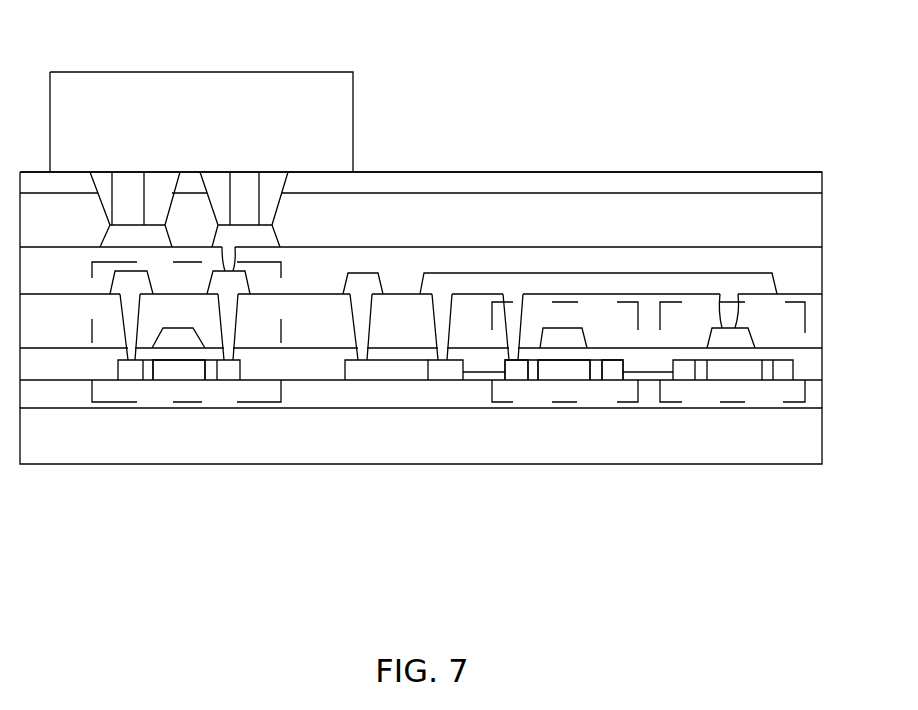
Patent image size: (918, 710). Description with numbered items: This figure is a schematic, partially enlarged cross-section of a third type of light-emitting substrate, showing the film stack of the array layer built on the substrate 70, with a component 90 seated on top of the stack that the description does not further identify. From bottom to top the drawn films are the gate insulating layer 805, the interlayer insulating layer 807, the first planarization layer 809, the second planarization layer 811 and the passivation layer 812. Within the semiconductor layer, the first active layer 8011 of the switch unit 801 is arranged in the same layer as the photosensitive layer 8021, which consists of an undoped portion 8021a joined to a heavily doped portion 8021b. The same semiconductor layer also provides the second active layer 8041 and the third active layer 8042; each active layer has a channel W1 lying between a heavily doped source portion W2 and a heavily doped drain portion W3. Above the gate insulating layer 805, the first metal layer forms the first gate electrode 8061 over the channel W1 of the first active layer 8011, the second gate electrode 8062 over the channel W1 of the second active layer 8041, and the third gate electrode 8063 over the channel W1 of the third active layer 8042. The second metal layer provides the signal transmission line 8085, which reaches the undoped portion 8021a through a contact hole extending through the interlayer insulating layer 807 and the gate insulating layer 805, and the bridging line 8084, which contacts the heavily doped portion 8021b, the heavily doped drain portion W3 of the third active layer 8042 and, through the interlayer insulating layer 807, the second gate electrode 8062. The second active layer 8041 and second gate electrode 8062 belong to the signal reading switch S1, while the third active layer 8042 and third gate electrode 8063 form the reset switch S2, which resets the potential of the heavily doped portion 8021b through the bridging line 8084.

The substrate 70 is at (798, 435).
The light emitting chip 90 is at (210, 107).
The switch unit 801 is at (186, 403).
The first active layer 8011 is at (163, 373).
The photosensitive layer 8021 is at (407, 463).
The undoped portion 8021a is at (365, 372).
The heavily doped portion 8021b is at (440, 372).
The second active layer 8041 is at (737, 370).
The third active layer 8042 is at (577, 372).
The gate insulating layer 805 is at (805, 370).
The first gate electrode 8061 is at (188, 340).
The second gate electrode 8062 is at (728, 340).
The third gate electrode 8063 is at (558, 340).
The interlayer insulating layer 807 is at (808, 338).
The bridging line 8084 is at (467, 288).
The signal transmission line 8085 is at (362, 290).
The first planarization layer 809 is at (798, 276).
The second planarization layer 811 is at (798, 229).
The passivation layer 812 is at (798, 185).
The signal reading switch S1 is at (673, 398).
The reset switch S2 is at (492, 372).
The channel W1 is at (585, 372).
The heavily doped source portion W2 is at (617, 370).
The heavily doped drain portion W3 is at (515, 372).